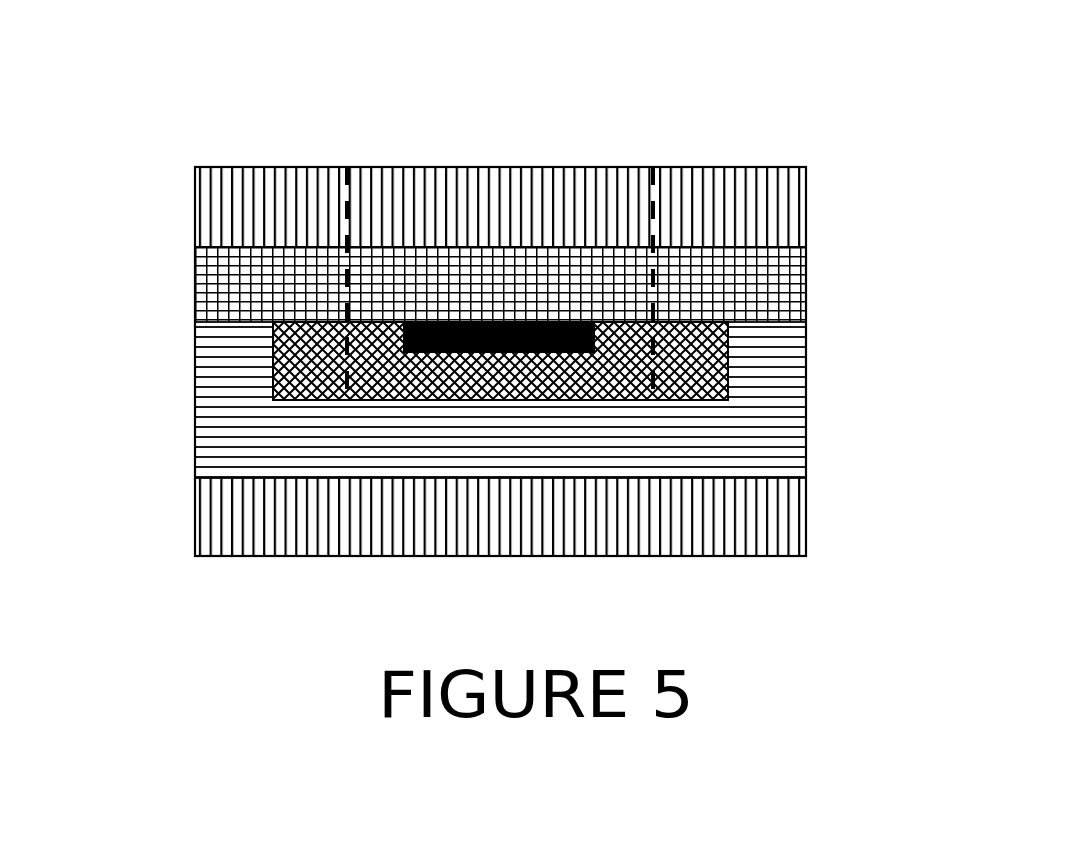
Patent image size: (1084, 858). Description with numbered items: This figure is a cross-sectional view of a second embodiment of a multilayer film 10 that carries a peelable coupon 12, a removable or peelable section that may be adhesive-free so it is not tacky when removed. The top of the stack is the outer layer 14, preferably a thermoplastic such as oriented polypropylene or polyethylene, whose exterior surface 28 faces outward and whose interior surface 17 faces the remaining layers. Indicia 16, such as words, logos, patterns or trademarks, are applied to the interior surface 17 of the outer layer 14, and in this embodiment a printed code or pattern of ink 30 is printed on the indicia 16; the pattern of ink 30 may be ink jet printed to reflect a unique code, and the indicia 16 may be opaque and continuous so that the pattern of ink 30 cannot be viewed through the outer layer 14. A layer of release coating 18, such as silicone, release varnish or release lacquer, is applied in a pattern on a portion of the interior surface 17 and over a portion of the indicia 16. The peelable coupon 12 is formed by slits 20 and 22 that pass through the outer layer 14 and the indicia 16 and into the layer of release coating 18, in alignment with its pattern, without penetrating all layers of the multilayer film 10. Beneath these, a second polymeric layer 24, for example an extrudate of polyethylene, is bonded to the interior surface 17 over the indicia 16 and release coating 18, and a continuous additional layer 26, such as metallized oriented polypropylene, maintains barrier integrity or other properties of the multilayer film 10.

The multilayer film 10 is at (150, 177).
The peelable coupon 12 is at (462, 148).
The outer layer 14 is at (783, 194).
The indicia 16 is at (785, 268).
The interior surface 17 is at (770, 244).
The layer of release coating 18 is at (710, 373).
The slit 20 is at (343, 176).
The slit 22 is at (658, 176).
The second polymeric layer 24 is at (780, 458).
The additional layer 26 is at (780, 533).
The exterior surface 28 is at (292, 162).
The pattern of ink 30 is at (427, 353).